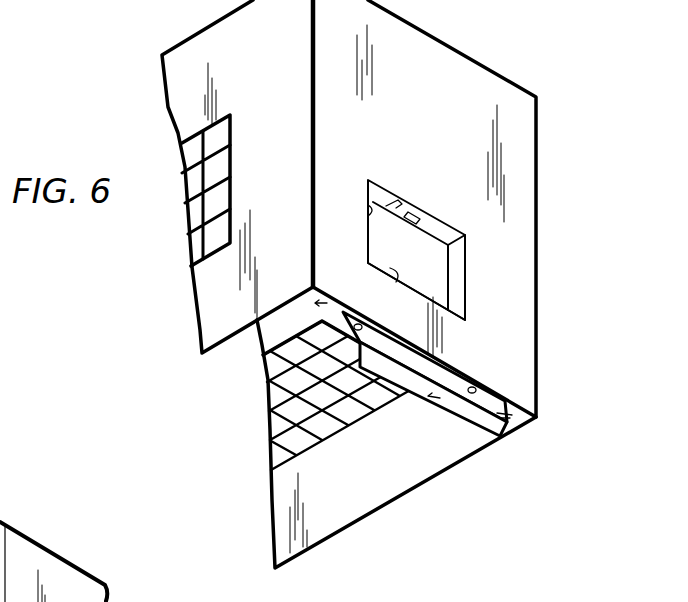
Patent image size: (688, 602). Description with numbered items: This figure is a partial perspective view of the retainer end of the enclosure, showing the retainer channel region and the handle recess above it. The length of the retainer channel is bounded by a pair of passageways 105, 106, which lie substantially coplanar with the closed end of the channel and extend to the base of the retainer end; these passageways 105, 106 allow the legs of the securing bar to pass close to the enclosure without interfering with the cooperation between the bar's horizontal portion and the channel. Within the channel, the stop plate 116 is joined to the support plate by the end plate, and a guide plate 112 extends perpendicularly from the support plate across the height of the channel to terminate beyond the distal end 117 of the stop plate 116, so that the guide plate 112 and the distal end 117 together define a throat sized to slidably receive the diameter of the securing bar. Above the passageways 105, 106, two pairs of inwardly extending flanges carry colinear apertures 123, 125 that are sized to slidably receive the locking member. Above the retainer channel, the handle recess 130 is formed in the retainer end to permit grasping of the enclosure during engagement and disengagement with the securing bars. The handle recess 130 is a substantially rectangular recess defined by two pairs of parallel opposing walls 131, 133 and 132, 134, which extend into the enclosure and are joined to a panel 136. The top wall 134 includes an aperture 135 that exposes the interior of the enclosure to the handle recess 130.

The passageway 105 is at (303, 292).
The passageway 106 is at (512, 423).
The guide plate 112 is at (420, 395).
The stop plate 116 is at (357, 322).
The distal end of the stop plate 117 is at (395, 362).
The aperture 123 is at (490, 433).
The aperture 125 is at (356, 334).
The handle recess 130 is at (459, 249).
The wall 131 is at (368, 208).
The wall 132 is at (395, 283).
The wall 133 is at (457, 255).
The top wall 134 is at (393, 202).
The aperture 135 is at (420, 220).
The panel 136 is at (437, 285).